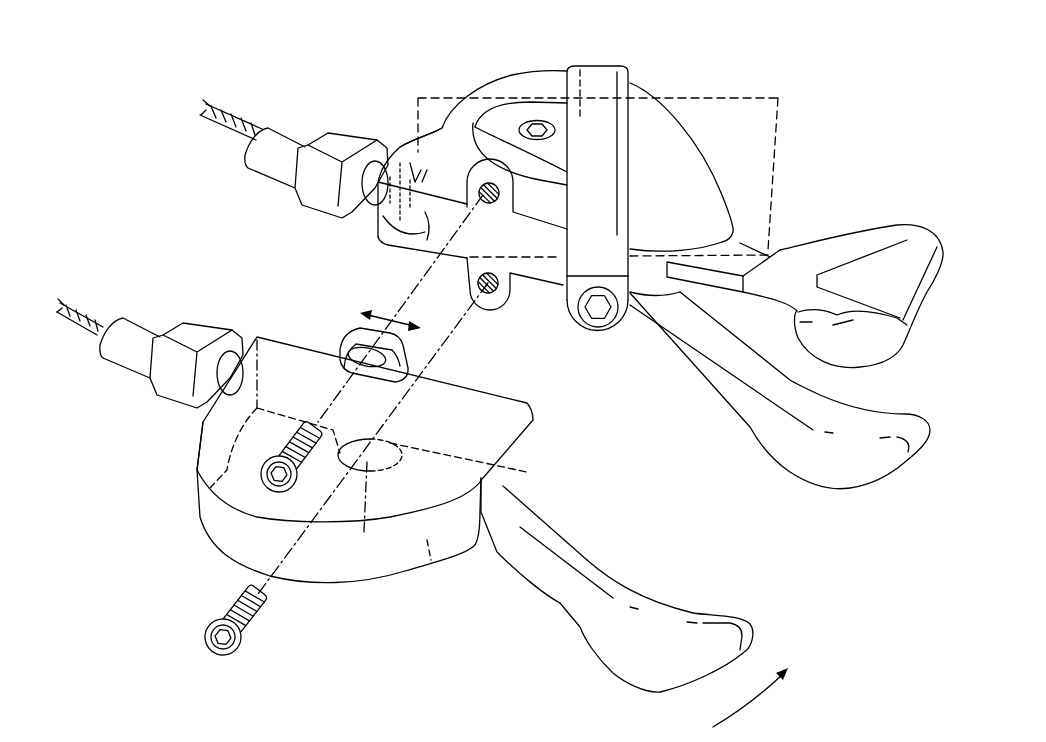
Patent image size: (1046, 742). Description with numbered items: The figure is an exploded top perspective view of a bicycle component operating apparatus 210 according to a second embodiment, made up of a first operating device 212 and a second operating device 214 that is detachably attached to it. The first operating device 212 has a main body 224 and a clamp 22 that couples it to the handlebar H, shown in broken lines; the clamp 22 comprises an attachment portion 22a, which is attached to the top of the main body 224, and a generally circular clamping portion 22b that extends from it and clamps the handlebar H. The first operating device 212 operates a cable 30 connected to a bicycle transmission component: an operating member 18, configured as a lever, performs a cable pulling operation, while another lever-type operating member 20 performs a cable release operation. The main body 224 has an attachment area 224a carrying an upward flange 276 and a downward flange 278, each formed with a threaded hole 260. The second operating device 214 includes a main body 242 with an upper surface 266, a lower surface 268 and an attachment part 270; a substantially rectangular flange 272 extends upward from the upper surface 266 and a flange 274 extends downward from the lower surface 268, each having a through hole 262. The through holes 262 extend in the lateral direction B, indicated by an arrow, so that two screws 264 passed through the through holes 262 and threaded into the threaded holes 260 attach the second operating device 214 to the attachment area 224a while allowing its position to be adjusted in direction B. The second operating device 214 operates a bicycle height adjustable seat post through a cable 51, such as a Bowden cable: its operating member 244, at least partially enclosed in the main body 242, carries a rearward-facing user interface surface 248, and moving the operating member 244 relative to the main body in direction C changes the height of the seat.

The operating member 18 is at (868, 484).
The operating member 20 is at (864, 240).
The clamp 22 is at (640, 197).
The attachment portion 22a is at (502, 121).
The clamping portion 22b is at (600, 150).
The cable 30 is at (230, 110).
The cable 51 is at (88, 305).
The bicycle component operating apparatus 210 is at (838, 158).
The first operating device 212 is at (455, 72).
The second operating device 214 is at (200, 540).
The main body 224 is at (539, 86).
The attachment area 224a is at (387, 222).
The main body 242 is at (528, 456).
The operating member 244 is at (582, 550).
The user interface surface 248 is at (727, 613).
The threaded hole 260 is at (485, 203).
The through hole 262 is at (371, 371).
The screw 264 is at (266, 484).
The upper surface 266 is at (212, 452).
The lower surface 268 is at (437, 570).
The attachment part 270 is at (292, 376).
The flange 272 is at (358, 344).
The flange 274 is at (364, 530).
The flange 276 is at (433, 134).
The flange 278 is at (512, 276).
The handlebar H is at (418, 96).
The direction B is at (397, 320).
The direction C is at (755, 707).